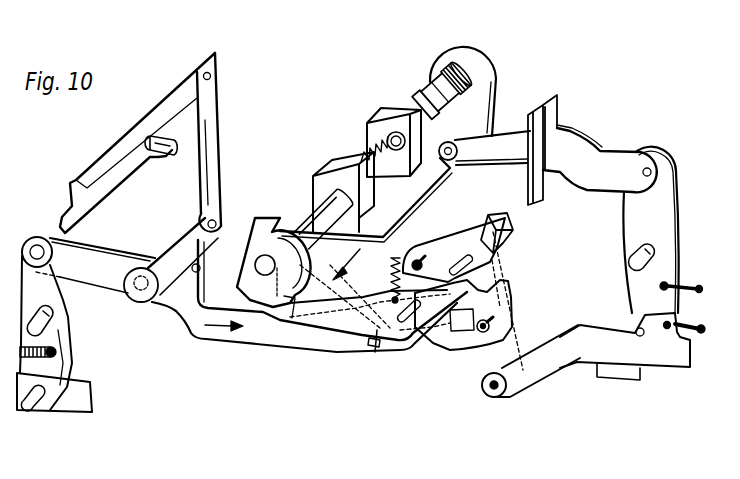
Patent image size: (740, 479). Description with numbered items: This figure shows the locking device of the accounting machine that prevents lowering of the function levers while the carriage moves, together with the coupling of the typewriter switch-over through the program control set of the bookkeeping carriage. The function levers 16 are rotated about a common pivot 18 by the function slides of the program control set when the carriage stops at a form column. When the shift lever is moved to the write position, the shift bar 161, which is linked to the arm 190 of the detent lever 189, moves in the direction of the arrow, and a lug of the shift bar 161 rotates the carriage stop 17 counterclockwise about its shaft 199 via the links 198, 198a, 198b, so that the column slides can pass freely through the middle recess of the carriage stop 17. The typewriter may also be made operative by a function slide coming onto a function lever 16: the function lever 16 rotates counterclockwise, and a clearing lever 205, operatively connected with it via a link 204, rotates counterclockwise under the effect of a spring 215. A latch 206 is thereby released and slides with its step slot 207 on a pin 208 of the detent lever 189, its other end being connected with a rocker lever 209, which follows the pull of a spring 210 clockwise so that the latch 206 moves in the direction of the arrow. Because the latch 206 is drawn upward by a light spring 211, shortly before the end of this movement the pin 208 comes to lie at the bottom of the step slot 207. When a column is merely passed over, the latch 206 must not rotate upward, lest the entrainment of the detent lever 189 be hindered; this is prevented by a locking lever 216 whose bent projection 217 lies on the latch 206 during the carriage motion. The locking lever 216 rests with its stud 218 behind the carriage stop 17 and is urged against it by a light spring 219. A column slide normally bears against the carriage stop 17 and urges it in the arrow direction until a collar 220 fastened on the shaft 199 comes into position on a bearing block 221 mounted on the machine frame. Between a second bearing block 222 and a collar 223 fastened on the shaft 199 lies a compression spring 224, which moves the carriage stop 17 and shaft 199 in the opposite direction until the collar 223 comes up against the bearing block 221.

The function lever 16 is at (120, 160).
The common pivot 18 is at (167, 134).
The link 204 is at (210, 117).
The spring 215 is at (211, 200).
The clearing lever 205 is at (162, 256).
The latch 206 is at (193, 318).
The carriage stop 17 is at (252, 308).
The shaft 199 is at (266, 276).
The stud 218 is at (285, 313).
The light spring 211 is at (392, 270).
The light spring 219 is at (373, 323).
The locking lever 216 is at (410, 317).
The step slot 207 is at (447, 327).
The pin 208 is at (480, 332).
The arm 190 is at (501, 342).
The shift bar 161 is at (553, 352).
The detent lever 189 is at (503, 232).
The bent projection 217 is at (480, 272).
The link 198 is at (640, 208).
The link 198a is at (597, 167).
The link 198b is at (452, 62).
The collar 220 is at (432, 97).
The bearing block 221 is at (400, 122).
The collar 223 is at (378, 110).
The compression spring 224 is at (363, 158).
The second bearing block 222 is at (333, 170).
The rocker lever 209 is at (57, 330).
The spring 210 is at (33, 359).